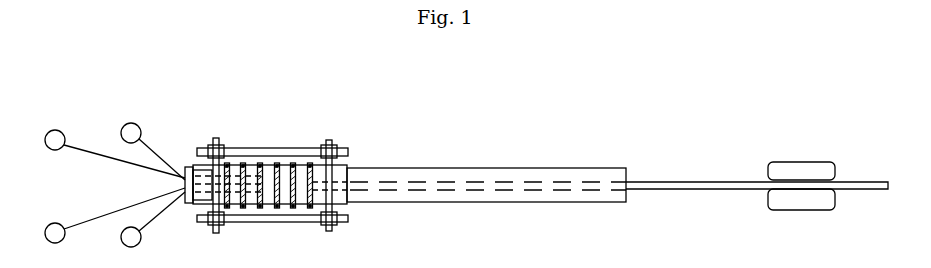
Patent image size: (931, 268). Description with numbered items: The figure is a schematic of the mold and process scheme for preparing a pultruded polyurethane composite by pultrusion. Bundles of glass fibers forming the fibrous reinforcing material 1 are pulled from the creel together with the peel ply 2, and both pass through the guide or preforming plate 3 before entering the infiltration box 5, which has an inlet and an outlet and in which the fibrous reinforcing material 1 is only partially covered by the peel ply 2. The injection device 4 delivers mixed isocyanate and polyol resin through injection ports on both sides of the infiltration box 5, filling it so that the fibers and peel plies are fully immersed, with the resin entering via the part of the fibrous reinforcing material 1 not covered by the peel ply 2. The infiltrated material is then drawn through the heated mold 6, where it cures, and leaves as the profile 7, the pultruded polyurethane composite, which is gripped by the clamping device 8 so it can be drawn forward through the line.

The fibrous reinforcing material 1 is at (53, 133).
The peel ply 2 is at (128, 128).
The preforming plate 3 is at (185, 164).
The injection device 4 is at (218, 151).
The infiltration box 5 is at (270, 166).
The mold 6 is at (415, 168).
The profile 7 is at (645, 182).
The clamping device 8 is at (800, 162).